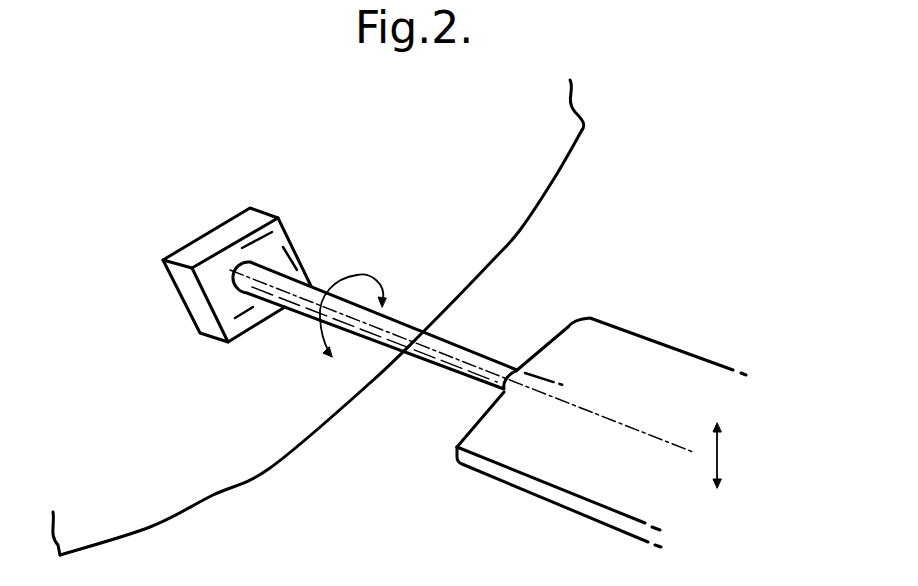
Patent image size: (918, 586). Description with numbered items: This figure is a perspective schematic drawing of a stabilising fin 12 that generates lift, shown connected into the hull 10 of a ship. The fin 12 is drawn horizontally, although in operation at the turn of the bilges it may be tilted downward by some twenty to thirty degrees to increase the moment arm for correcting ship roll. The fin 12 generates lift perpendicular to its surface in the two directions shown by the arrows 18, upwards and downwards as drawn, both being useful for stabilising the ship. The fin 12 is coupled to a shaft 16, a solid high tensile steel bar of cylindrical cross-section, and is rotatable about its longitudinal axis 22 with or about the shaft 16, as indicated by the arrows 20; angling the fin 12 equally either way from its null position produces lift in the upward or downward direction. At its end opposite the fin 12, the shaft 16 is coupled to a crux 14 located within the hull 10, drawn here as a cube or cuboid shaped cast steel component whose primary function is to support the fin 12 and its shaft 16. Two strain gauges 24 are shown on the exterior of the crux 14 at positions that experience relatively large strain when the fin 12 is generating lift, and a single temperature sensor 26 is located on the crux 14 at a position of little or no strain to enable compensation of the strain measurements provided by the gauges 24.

The hull 10 is at (523, 176).
The stabilising fin 12 is at (645, 357).
The crux 14 is at (194, 297).
The shaft 16 is at (449, 362).
The arrows indicating directions of lift 18 is at (718, 453).
The arrows indicating rotation 20 is at (372, 275).
The longitudinal axis 22 is at (628, 430).
The strain gauge 24 is at (253, 242).
The temperature sensor 26 is at (292, 258).